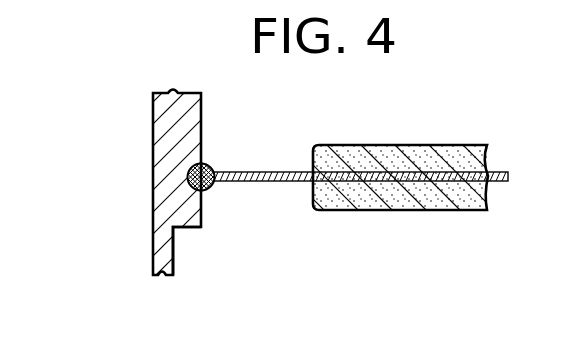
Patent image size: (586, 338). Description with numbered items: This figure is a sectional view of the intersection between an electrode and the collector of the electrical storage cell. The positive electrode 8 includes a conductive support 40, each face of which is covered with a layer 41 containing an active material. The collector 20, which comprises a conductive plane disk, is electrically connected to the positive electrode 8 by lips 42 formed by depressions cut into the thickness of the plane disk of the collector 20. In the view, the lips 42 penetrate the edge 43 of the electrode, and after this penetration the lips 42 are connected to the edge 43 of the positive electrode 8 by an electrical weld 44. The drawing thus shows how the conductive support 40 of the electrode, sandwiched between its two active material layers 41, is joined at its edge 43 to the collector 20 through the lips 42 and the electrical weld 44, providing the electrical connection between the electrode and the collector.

The collector 20 is at (153, 223).
The lips 42 is at (187, 212).
The conductive support 40 is at (252, 172).
The layer containing an active material 41 is at (428, 198).
The positive electrode 8 is at (393, 193).
The edge of the electrode 43 is at (212, 186).
The electrical weld 44 is at (190, 171).